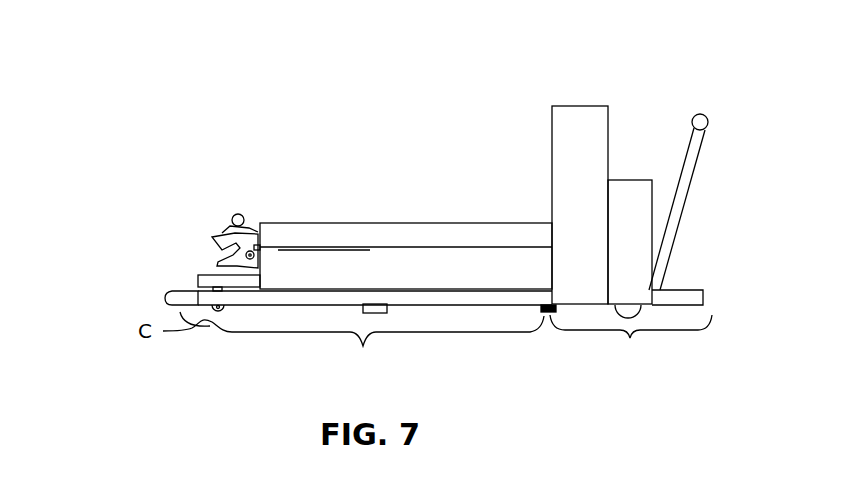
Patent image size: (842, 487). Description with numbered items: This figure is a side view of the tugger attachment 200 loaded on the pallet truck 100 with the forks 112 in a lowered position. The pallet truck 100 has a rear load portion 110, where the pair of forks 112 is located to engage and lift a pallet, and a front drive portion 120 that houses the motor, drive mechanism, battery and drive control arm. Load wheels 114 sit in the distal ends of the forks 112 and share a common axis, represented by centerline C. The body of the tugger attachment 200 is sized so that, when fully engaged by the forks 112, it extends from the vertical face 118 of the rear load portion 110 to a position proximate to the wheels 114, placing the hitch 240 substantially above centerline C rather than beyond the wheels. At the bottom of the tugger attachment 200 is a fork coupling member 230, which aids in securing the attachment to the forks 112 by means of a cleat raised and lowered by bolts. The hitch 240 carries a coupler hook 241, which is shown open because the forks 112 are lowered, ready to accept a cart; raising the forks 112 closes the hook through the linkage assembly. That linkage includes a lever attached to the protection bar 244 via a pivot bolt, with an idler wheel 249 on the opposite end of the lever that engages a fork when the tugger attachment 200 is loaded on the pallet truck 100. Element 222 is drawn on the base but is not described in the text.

The pallet truck 100 is at (598, 158).
The rear load portion 110 is at (388, 344).
The forks 112 is at (272, 316).
The load wheels 114 is at (216, 332).
The vertical face 118 is at (532, 184).
The front drive portion 120 is at (631, 332).
The tugger attachment 200 is at (424, 147).
The stop block 222 is at (530, 326).
The fork coupling member 230 is at (348, 325).
The hitch 240 is at (215, 193).
The coupler hook 241 is at (190, 239).
The protection bar 244 is at (200, 277).
The idler wheel 249 is at (177, 291).